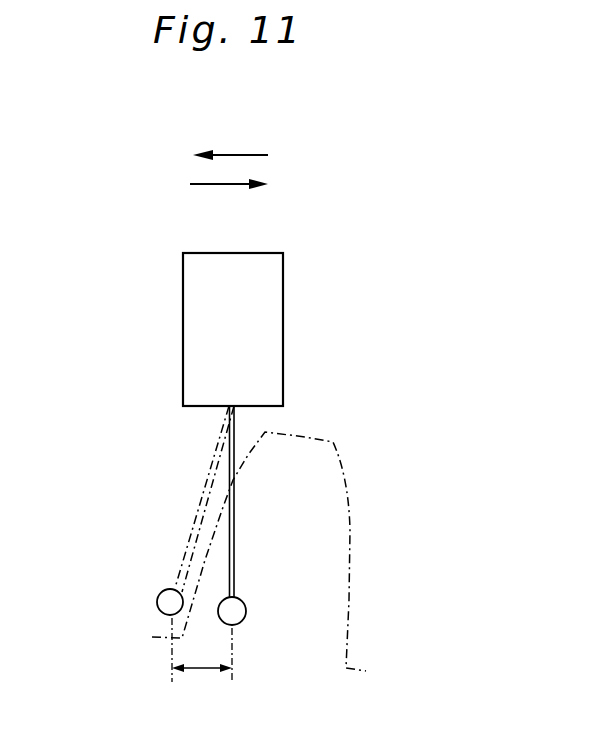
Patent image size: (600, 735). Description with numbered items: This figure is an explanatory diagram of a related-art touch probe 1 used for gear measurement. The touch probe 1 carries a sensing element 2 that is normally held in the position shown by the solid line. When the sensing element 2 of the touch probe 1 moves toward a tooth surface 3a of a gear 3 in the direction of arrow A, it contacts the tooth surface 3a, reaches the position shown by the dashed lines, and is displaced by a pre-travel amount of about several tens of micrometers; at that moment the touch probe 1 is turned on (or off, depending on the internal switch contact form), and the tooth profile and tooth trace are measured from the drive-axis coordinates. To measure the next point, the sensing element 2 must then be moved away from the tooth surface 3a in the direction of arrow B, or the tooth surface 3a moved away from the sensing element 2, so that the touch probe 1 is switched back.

The touch probe 1 is at (273, 278).
The sensing element 2 is at (245, 618).
The gear 3 is at (305, 437).
The tooth surface 3a is at (213, 512).
The arrow A is at (228, 184).
The arrow B is at (232, 155).